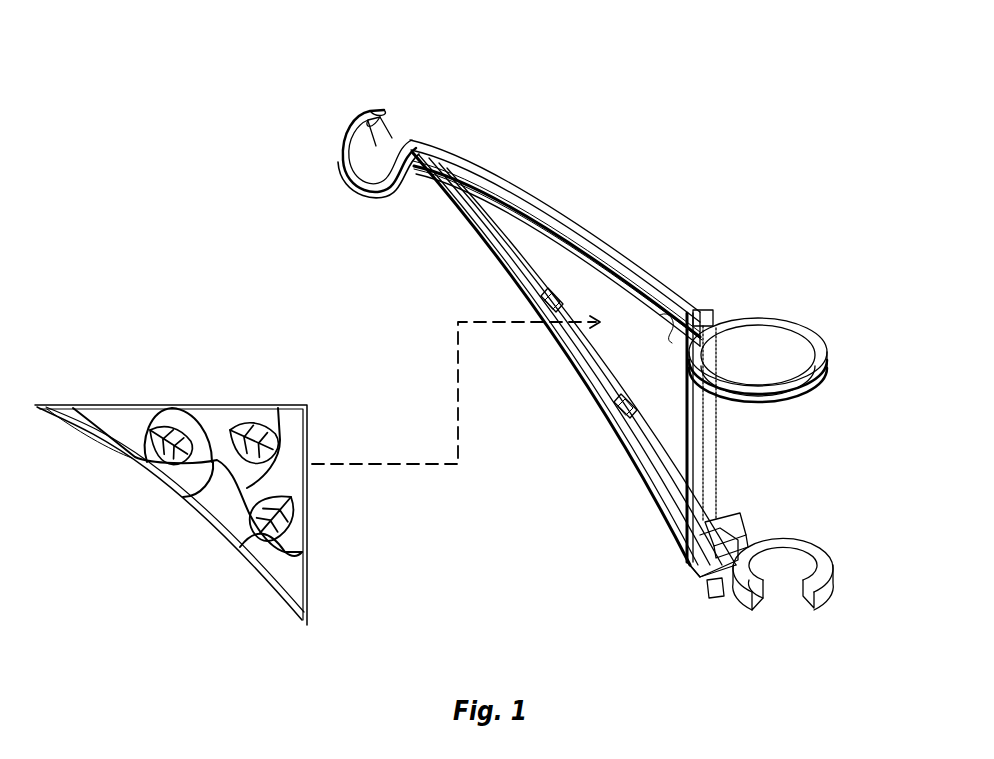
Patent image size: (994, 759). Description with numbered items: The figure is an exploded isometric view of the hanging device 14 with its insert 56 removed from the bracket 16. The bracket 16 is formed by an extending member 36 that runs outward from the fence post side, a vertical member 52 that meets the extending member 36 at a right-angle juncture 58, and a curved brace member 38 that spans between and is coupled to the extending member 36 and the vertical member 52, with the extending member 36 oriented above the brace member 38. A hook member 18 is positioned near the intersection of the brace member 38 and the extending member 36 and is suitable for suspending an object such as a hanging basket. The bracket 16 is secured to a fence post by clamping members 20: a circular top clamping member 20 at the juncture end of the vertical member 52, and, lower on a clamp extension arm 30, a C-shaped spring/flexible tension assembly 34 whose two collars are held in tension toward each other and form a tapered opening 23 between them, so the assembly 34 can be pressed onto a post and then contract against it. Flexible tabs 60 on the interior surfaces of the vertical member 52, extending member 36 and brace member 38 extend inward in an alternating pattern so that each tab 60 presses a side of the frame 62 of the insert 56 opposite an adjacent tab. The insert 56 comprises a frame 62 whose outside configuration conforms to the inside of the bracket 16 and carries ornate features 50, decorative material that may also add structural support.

The device 14 is at (621, 150).
The bracket 16 is at (513, 177).
The hook member 18 is at (362, 126).
The clamping member 20 is at (768, 300).
The opening 23 is at (779, 582).
The clamp extension arm 30 is at (718, 527).
The C-shaped spring/flexible tension assembly 34 is at (716, 586).
The extending member 36 is at (637, 268).
The brace member 38 is at (640, 463).
The ornate features 50 is at (218, 425).
The vertical member 52 is at (703, 442).
The insert 56 is at (172, 382).
The juncture 58 is at (662, 353).
The flexible tabs 60 is at (540, 313).
The frame 62 is at (312, 418).